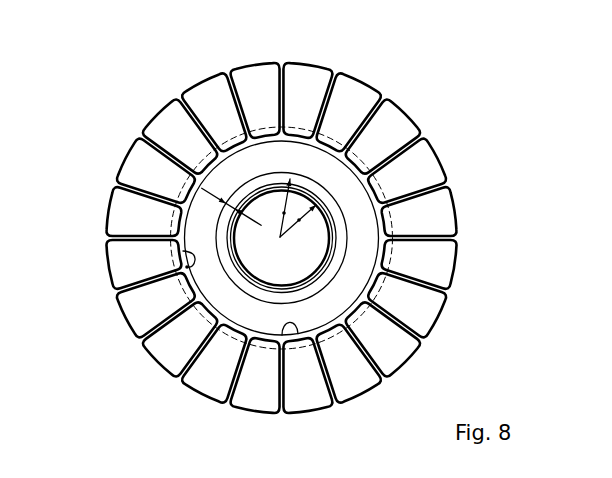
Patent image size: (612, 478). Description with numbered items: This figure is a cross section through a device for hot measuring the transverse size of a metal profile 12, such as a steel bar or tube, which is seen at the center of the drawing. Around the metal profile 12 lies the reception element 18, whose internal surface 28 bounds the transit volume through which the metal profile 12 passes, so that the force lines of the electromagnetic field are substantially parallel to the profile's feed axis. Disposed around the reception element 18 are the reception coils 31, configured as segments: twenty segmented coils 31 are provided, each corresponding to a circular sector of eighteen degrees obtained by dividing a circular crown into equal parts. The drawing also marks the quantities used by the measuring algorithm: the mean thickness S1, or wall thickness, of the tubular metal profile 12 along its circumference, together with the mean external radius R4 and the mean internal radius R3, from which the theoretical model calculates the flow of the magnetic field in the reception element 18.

The metal profile 12 is at (330, 212).
The reception element 18 is at (182, 250).
The internal surface 28 is at (287, 336).
The reception coils 31 is at (302, 63).
The mean thickness S1 is at (238, 209).
The mean internal radius R3 is at (299, 220).
The mean external radius R4 is at (284, 213).